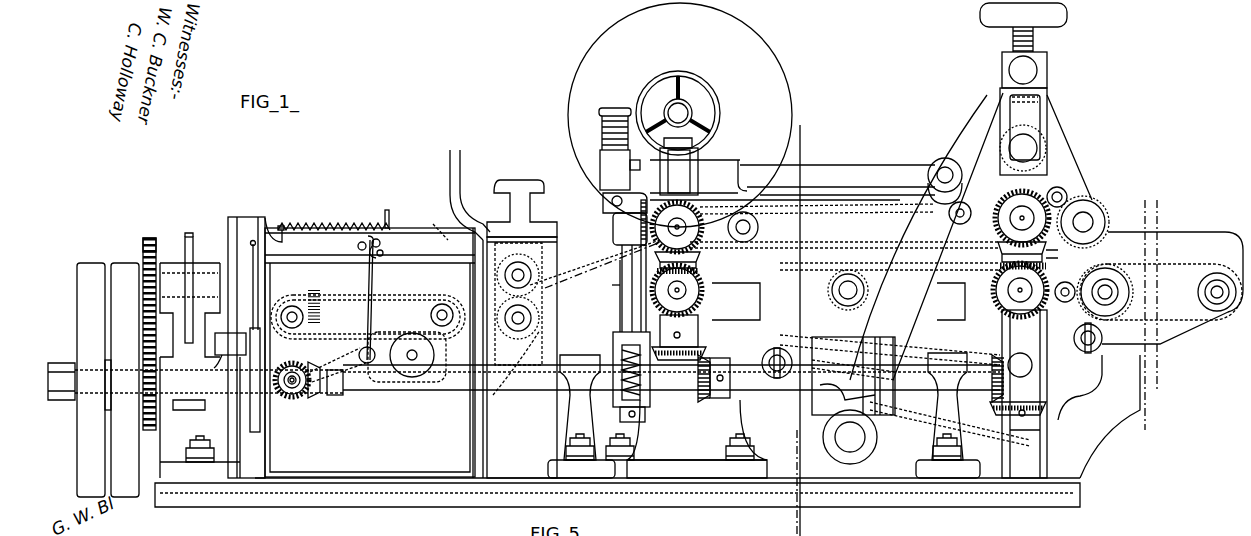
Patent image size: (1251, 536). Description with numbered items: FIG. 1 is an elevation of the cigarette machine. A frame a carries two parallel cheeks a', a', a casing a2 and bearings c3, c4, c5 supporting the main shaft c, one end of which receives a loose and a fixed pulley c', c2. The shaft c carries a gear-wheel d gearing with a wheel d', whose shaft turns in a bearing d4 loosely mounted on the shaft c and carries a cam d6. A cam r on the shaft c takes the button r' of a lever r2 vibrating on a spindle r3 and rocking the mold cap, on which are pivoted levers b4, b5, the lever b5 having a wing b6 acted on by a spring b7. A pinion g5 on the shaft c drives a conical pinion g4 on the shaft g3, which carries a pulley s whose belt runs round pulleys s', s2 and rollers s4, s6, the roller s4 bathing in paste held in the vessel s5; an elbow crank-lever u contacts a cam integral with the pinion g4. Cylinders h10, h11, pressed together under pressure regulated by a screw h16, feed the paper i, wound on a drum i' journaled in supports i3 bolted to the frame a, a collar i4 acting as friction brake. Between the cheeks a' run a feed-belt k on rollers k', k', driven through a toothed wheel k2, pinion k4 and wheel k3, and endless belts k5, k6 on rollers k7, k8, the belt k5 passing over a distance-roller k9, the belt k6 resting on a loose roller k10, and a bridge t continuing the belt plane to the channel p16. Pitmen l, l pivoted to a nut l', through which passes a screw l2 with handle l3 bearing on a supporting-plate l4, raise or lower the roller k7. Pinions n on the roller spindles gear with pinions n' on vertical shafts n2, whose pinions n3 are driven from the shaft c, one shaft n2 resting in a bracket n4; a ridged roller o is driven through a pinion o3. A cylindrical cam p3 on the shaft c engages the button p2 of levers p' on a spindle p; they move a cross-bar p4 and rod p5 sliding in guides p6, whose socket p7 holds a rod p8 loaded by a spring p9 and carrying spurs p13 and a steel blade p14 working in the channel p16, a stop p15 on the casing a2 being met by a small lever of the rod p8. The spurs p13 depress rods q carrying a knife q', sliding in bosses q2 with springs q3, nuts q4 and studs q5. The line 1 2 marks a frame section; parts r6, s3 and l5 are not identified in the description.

The frame a is at (617, 455).
The parallel cheeks a' is at (1172, 314).
The casing a2 is at (374, 353).
The main shaft c is at (524, 385).
The pulley c' is at (91, 380).
The pulley c2 is at (125, 380).
The bearing c3 is at (200, 417).
The bearing c4 is at (591, 416).
The bearing c5 is at (948, 415).
The gear-wheel d is at (135, 343).
The gear-wheel d' is at (164, 227).
The bearing d4 is at (190, 336).
The cam d6 is at (194, 240).
The cam r is at (235, 347).
The button r' is at (251, 391).
The lever r2 is at (253, 312).
The spindle r3 is at (230, 350).
The cap r6 is at (268, 222).
The lever b4 is at (298, 235).
The lever b5 is at (441, 219).
The wing b6 is at (389, 210).
The opposing spring b7 is at (370, 238).
The elbow crank-lever u is at (372, 276).
The pulley s is at (289, 410).
The pulley s' is at (310, 317).
The pulley s2 is at (432, 316).
The belt s3 is at (325, 300).
The roller s4 is at (405, 375).
The vessel s5 is at (420, 383).
The roller s6 is at (372, 345).
The shaft g3 is at (286, 392).
The conical pinion g4 is at (313, 398).
The pinion g5 is at (336, 396).
The abutment or stop p15 is at (456, 152).
The screw h16 is at (522, 192).
The cylinder h11 is at (538, 272).
The cylinder h10 is at (538, 330).
The paper i is at (668, 157).
The drum i' is at (705, 113).
The support i3 is at (700, 433).
The collar i4 is at (688, 106).
The rod p8 is at (600, 135).
The opposing spring p9 is at (600, 116).
The socket p7 is at (620, 170).
The spurs p13 is at (612, 200).
The steel blade p14 is at (641, 228).
The channel p16 is at (625, 262).
The rods q is at (634, 288).
The knife q' is at (642, 296).
The cylindrical bosses q2 is at (613, 338).
The spiral springs q3 is at (620, 372).
The nuts q4 is at (646, 414).
The studs q5 is at (620, 288).
The upper roller k7 is at (700, 205).
The slide or guides p6 is at (720, 175).
The rod p5 is at (862, 172).
The toothed pinion n is at (850, 263).
The pinion n' is at (850, 255).
The vertical shaft n2 is at (1024, 394).
The pinion n3 is at (700, 362).
The bracket n4 is at (1054, 440).
The upper endless belt k5 is at (760, 230).
The lower endless belt k6 is at (780, 340).
The lower roller k8 is at (851, 301).
The loose roller k10 is at (828, 292).
The distance-roller k9 is at (963, 202).
The section line 1 2 1 is at (808, 330).
The section line 1 2 is at (807, 483).
The shaft or spindle p is at (848, 424).
The levers p' is at (971, 236).
The button p2 is at (890, 375).
The cylindrical cam p3 is at (812, 400).
The cross-bar p4 is at (947, 170).
The pitmen l is at (1004, 131).
The nut l' is at (1017, 70).
The screw l2 is at (1035, 40).
The operating-handle l3 is at (982, 14).
The supporting-plate l4 is at (1040, 100).
The pulley l5 is at (1040, 118).
The roller o is at (1088, 200).
The pinion o3 is at (1058, 187).
The bridge t is at (1053, 250).
The feed-belt k is at (1161, 277).
The rollers k' is at (1182, 292).
The toothed wheel k2 is at (1112, 268).
The wheel k3 is at (1065, 303).
The pinion k4 is at (1090, 272).